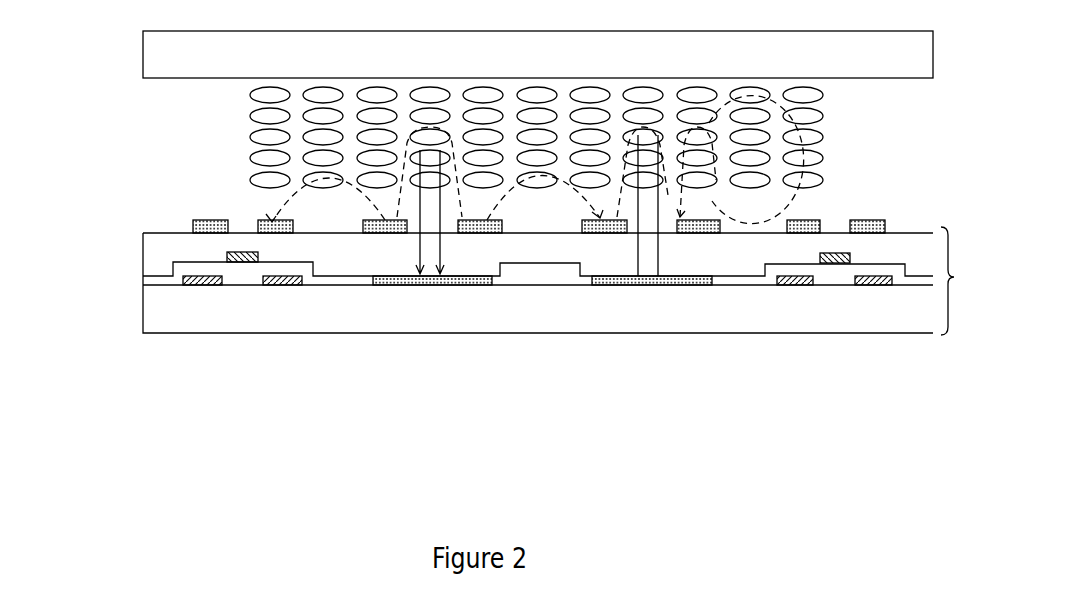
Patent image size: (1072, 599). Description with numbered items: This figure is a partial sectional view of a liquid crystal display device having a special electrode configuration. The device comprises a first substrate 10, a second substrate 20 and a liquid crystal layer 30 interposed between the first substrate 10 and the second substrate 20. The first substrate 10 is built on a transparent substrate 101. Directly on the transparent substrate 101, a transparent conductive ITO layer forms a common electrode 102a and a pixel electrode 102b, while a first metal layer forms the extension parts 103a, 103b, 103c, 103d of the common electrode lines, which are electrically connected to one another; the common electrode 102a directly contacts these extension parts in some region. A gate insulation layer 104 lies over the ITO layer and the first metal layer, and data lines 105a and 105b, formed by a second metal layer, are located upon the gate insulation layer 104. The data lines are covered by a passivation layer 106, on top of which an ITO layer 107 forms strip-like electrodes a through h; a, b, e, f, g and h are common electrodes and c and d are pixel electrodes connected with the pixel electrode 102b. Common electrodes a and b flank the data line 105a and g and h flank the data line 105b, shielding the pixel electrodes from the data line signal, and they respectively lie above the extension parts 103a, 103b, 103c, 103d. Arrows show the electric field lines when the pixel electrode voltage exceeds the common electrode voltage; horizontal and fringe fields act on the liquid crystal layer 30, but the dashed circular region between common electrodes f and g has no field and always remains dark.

The first substrate 10 is at (963, 281).
The second substrate 20 is at (923, 47).
The liquid crystal layer 30 is at (807, 120).
The transparent substrate 101 is at (908, 325).
The common electrode 102a is at (422, 286).
The pixel electrode 102b is at (623, 285).
The extension part of common electrode line 103a is at (195, 285).
The extension part of common electrode line 103b is at (277, 285).
The extension part of common electrode line 103c is at (778, 285).
The extension part of common electrode line 103d is at (868, 285).
The gate insulation layer 104 is at (155, 281).
The data line 105a is at (227, 256).
The data line 105b is at (850, 260).
The passivation layer 106 is at (172, 243).
The ITO layer 107 is at (195, 228).